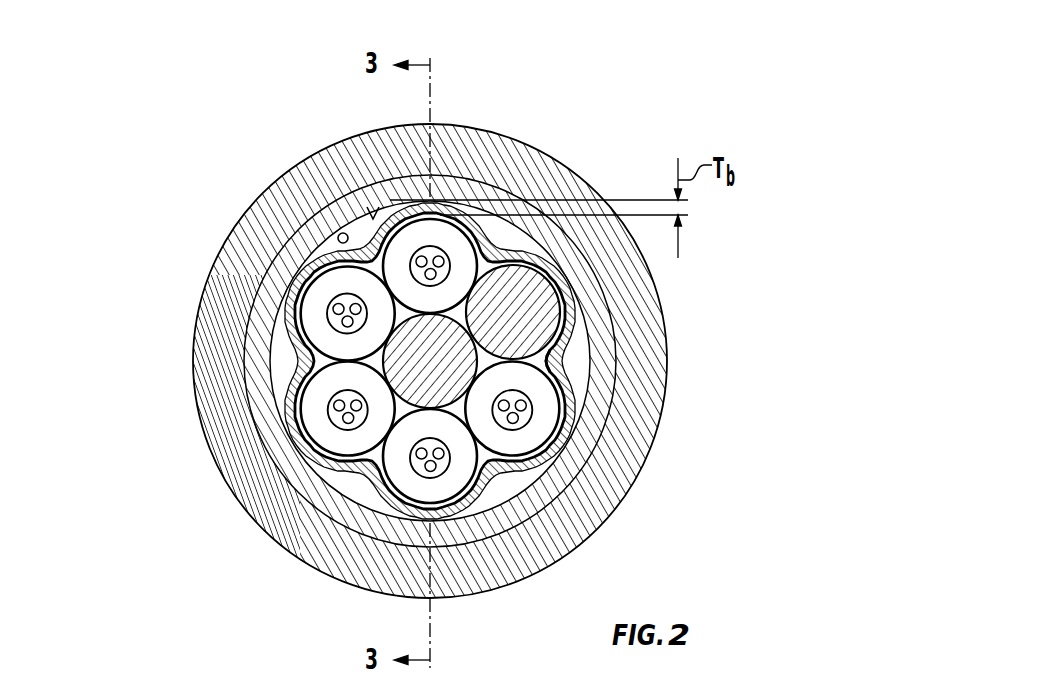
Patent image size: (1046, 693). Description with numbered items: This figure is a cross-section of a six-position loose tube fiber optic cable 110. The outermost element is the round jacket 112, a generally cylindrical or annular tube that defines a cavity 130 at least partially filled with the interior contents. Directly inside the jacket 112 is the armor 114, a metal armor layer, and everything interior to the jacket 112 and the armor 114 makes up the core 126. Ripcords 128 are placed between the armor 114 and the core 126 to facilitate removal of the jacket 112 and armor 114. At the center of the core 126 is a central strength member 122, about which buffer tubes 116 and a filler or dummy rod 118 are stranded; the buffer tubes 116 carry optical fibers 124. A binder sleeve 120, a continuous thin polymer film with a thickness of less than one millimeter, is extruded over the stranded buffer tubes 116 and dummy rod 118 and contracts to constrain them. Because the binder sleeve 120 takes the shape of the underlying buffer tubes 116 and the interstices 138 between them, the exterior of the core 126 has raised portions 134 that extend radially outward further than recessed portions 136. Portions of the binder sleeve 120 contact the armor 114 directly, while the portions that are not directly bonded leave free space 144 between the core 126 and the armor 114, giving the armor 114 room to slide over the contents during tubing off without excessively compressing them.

The fiber optic cable 110 is at (658, 133).
The jacket 112 is at (650, 392).
The armor 114 is at (603, 402).
The buffer tubes 116 is at (343, 430).
The dummy rod 118 is at (560, 298).
The binder sleeve 120 is at (545, 506).
The central strength member 122 is at (415, 372).
The optical fibers 124 is at (352, 309).
The core 126 is at (350, 220).
The ripcords 128 is at (338, 238).
The cavity 130 is at (373, 214).
The raised portions 134 is at (315, 281).
The recessed portions 136 is at (285, 334).
The interstices 138 is at (540, 361).
The free space 144 is at (393, 204).